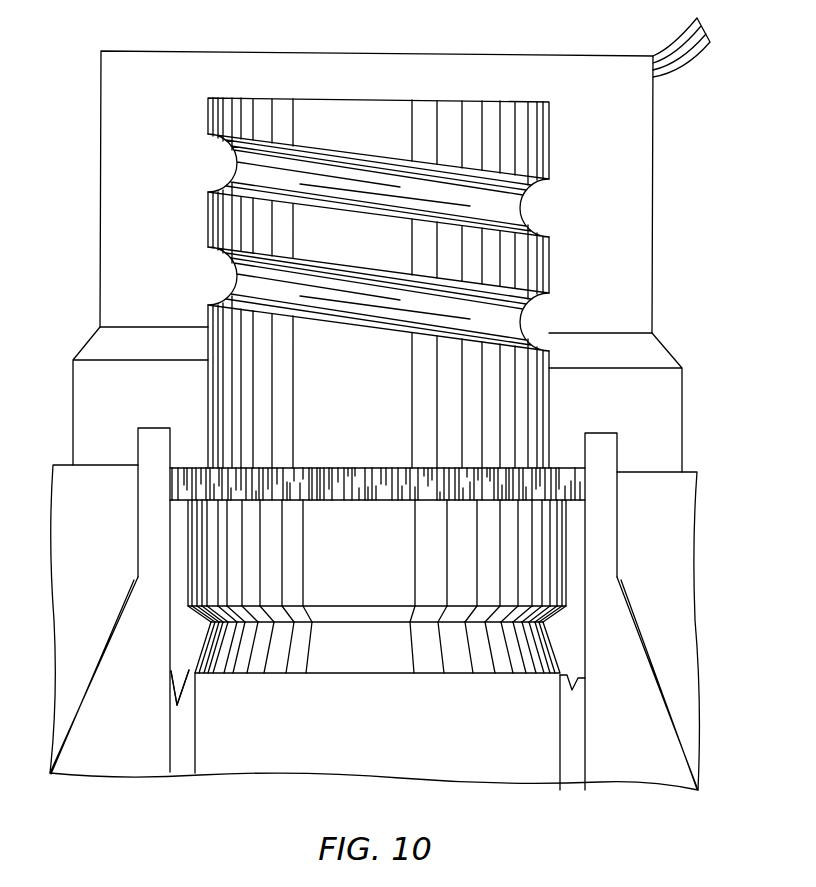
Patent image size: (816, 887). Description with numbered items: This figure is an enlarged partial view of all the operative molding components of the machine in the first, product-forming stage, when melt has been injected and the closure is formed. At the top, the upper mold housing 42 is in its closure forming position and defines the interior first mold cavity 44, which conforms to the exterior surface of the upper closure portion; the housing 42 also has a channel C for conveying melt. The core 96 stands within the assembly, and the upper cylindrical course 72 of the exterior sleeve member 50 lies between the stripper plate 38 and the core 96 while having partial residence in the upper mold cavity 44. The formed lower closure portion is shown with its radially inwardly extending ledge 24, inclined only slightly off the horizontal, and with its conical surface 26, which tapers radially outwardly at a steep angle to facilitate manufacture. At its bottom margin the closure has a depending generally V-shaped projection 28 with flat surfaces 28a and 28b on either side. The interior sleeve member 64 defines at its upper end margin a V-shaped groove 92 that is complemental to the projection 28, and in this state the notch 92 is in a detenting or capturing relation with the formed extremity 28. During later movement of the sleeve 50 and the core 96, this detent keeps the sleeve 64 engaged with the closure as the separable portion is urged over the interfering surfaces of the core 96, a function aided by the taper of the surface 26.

The interior first mold cavity 44 is at (375, 84).
The upper mold housing 42 is at (61, 281).
The channel C is at (672, 40).
The core 96 is at (560, 155).
The upper cylindrical course 72 is at (612, 449).
The stripper plate 38 is at (90, 558).
The exterior sleeve member 50 is at (128, 653).
The ledge 24 is at (363, 612).
The conical surface 26 is at (348, 658).
The interior sleeve member 64 is at (185, 753).
The V-shaped groove 92 is at (578, 680).
The V-shaped projection 28 is at (176, 704).
The flat surface 28a is at (168, 674).
The flat surface 28b is at (195, 675).